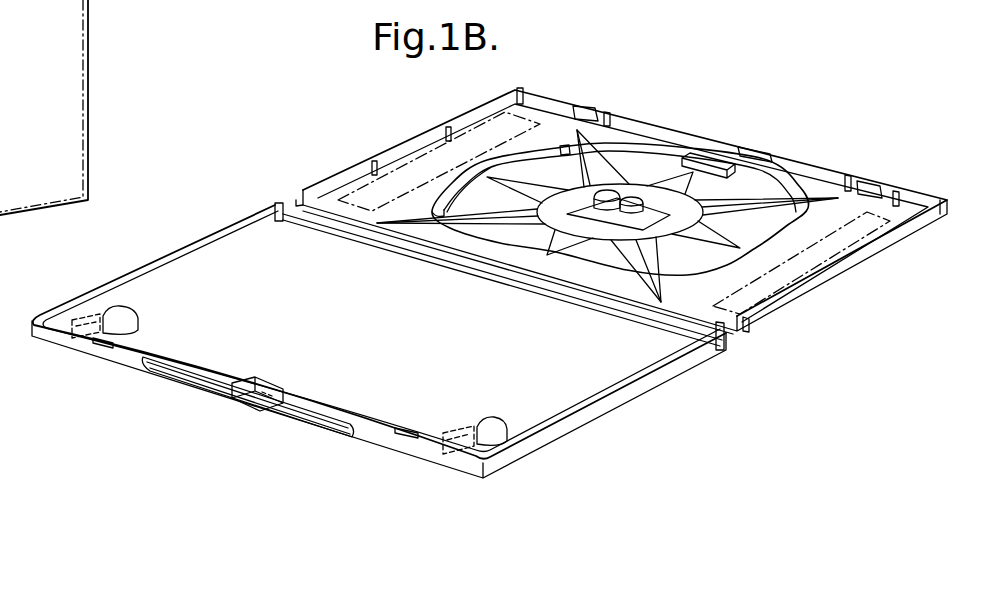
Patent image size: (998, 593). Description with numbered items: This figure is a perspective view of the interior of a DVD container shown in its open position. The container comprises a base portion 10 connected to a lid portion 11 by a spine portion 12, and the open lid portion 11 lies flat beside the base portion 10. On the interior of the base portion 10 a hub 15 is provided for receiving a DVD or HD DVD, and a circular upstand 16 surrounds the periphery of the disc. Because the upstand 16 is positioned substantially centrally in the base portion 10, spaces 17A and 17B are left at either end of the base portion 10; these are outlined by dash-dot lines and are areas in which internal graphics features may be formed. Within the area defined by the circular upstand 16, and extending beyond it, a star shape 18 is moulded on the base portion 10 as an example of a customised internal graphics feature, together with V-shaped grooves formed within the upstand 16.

The base portion 10 is at (907, 212).
The lid portion 11 is at (593, 383).
The spine portion 12 is at (695, 330).
The hub 15 is at (610, 196).
The circular upstand 16 is at (757, 170).
The space 17A is at (437, 160).
The space 17B is at (812, 258).
The star shape 18 is at (597, 165).